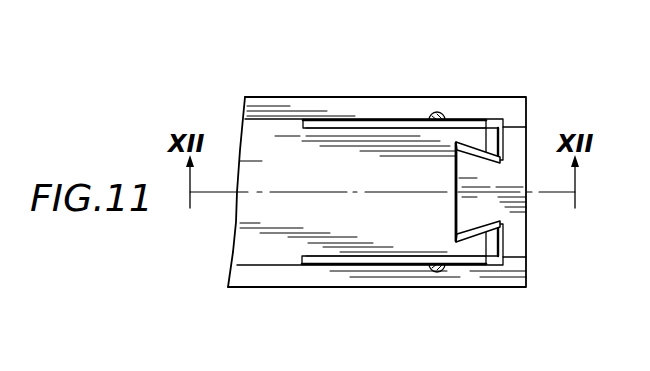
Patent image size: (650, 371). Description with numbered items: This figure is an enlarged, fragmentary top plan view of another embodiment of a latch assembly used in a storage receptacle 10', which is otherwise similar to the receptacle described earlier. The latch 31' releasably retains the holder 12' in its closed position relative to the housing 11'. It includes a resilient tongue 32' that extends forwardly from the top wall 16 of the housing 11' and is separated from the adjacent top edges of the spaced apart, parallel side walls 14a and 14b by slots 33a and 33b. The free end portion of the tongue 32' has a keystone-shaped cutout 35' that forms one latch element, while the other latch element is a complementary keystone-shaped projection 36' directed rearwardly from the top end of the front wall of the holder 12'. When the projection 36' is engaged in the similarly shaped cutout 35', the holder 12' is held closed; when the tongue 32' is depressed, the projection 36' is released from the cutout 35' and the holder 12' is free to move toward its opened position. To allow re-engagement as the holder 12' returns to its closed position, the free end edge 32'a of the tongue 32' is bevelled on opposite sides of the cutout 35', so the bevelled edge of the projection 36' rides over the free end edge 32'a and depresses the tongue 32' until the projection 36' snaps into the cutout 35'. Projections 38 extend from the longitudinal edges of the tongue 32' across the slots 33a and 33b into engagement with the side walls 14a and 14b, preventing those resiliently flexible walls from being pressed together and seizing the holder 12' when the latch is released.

The storage receptacle 10' is at (390, 177).
The housing 11' is at (377, 163).
The holder 12' is at (497, 192).
The side wall 14a is at (373, 281).
The side wall 14b is at (406, 97).
The top wall 16 is at (251, 233).
The latch 31' is at (526, 138).
The tongue 32' is at (391, 232).
The free end edge 32'a is at (532, 198).
The slot 33a is at (409, 259).
The slot 33b is at (357, 126).
The keystone-shaped cutout 35' is at (446, 191).
The keystone-shaped projection 36' is at (446, 225).
The projection 38 is at (451, 122).